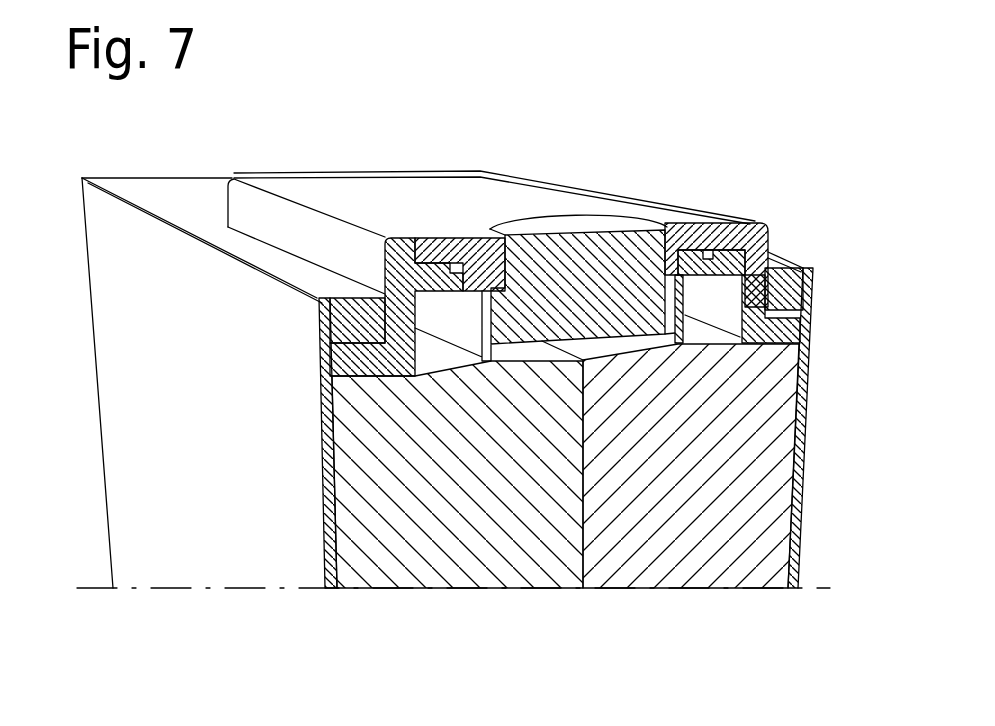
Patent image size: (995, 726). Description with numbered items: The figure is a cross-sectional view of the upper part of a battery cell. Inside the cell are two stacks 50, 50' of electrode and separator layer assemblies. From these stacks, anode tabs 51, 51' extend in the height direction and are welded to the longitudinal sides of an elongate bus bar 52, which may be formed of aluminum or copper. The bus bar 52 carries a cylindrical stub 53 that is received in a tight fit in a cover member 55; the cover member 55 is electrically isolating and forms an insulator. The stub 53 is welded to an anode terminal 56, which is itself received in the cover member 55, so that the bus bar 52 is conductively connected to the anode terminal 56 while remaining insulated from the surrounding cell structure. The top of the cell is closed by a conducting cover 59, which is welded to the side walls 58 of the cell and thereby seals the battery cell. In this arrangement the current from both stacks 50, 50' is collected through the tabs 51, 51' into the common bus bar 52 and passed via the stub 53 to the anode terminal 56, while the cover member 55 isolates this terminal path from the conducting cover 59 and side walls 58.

The stack 50 is at (457, 515).
The stack 50' is at (698, 462).
The anode tab 51 is at (352, 347).
The anode tab 51' is at (779, 312).
The bus bar 52 is at (684, 303).
The cylindrical stub 53 is at (594, 225).
The cover member 55 is at (767, 243).
The anode terminal 56 is at (502, 188).
The side walls 58 is at (137, 478).
The conducting cover 59 is at (167, 187).